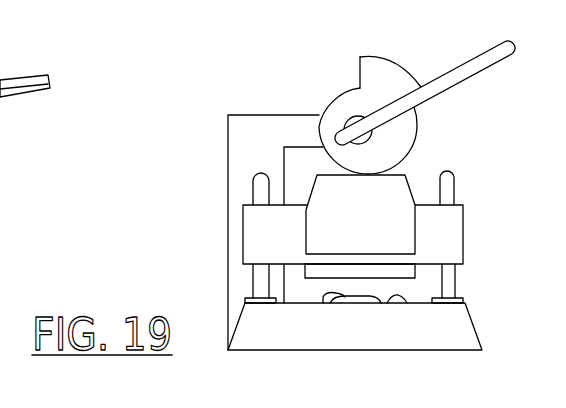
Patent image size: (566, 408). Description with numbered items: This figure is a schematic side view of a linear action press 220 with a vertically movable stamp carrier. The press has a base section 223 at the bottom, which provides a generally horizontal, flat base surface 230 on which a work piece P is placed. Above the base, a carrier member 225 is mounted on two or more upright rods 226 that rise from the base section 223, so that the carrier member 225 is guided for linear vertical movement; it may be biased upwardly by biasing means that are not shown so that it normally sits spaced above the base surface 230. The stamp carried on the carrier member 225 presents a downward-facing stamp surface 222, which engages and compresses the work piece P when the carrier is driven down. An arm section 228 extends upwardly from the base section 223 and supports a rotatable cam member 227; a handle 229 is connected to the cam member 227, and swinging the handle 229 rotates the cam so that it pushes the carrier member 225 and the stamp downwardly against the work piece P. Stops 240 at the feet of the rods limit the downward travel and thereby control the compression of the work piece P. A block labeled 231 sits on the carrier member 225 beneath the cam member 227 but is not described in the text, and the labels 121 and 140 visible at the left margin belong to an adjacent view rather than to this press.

The linear action press 220 is at (231, 86).
The stamp surface 222 is at (392, 276).
The base section 223 is at (277, 340).
The carrier member 225 is at (438, 230).
The upright rods 226 is at (254, 184).
The cam member 227 is at (387, 90).
The arm section 228 is at (270, 124).
The handle 229 is at (450, 87).
The base surface 230 is at (407, 303).
The slide block 231 is at (377, 231).
The stops 240 is at (244, 301).
The work piece P is at (323, 303).
The adjacent figure element 121 is at (25, 110).
The adjacent figure element 140 is at (0, 200).